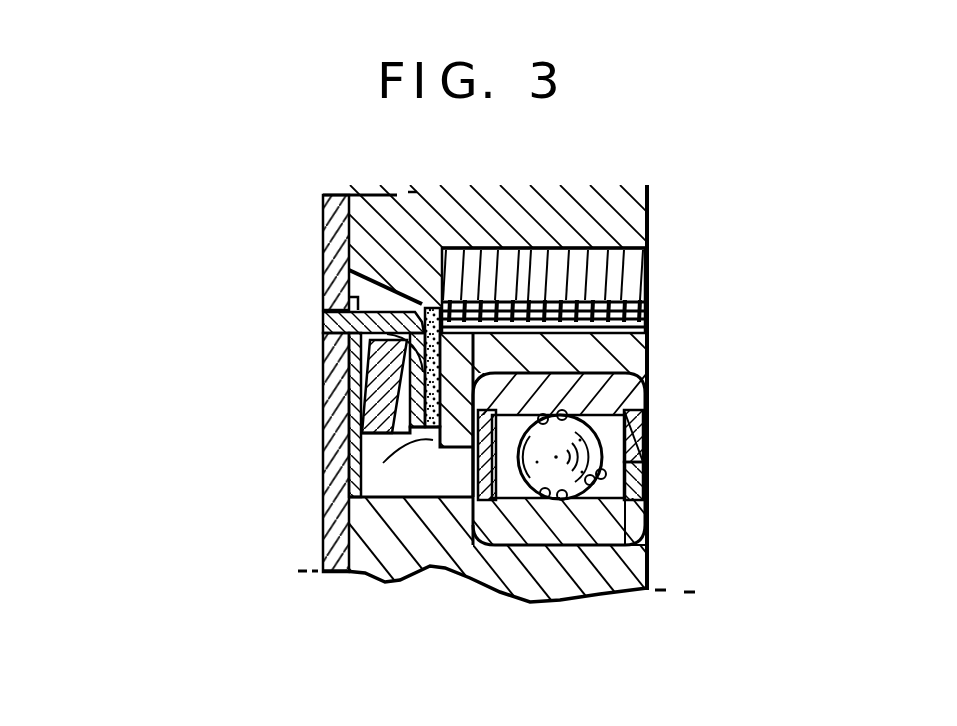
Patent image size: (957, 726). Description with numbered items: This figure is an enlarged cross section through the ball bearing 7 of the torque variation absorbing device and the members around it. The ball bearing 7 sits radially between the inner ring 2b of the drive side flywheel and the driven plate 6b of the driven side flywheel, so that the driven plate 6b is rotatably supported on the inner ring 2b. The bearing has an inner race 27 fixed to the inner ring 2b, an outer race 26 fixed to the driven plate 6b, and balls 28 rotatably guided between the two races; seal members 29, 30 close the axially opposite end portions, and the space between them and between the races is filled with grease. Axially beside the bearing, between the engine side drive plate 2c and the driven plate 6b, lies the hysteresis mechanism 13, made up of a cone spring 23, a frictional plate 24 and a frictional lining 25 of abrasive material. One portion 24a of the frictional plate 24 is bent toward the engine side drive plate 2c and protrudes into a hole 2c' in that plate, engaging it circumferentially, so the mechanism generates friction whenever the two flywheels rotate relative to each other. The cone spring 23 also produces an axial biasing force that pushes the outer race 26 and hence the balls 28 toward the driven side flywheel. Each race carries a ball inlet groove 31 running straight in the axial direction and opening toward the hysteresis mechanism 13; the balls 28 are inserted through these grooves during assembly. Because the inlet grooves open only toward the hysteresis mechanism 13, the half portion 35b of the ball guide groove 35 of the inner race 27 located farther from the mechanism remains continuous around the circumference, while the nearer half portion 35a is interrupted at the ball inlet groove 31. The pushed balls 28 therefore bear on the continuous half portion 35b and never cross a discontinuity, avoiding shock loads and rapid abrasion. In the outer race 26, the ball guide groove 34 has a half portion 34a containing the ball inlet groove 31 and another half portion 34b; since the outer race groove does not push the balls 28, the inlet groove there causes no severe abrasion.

The inner ring 2b is at (368, 573).
The engine side drive plate 2c is at (302, 383).
The hole 2c' is at (329, 277).
The driven plate 6b is at (620, 222).
The ball bearing 7 is at (676, 537).
The hysteresis mechanism 13 is at (312, 312).
The cone spring 23 is at (323, 382).
The frictional plate 24 is at (323, 408).
The bent portion of frictional plate 24a is at (323, 325).
The frictional lining 25 is at (323, 462).
The outer race 26 is at (648, 392).
The inner race 27 is at (630, 535).
The balls 28 is at (603, 463).
The seal member 29 is at (455, 490).
The seal member 30 is at (635, 450).
The ball inlet groove 31 is at (428, 308).
The ball guide groove 34 is at (573, 285).
The half portion of ball guide groove 34a is at (510, 285).
The spring dense coil portion 34b is at (567, 372).
The ball guide groove 35 is at (580, 492).
The half portion of ball guide groove 35a is at (548, 505).
The half portion of ball guide groove 35b is at (632, 562).